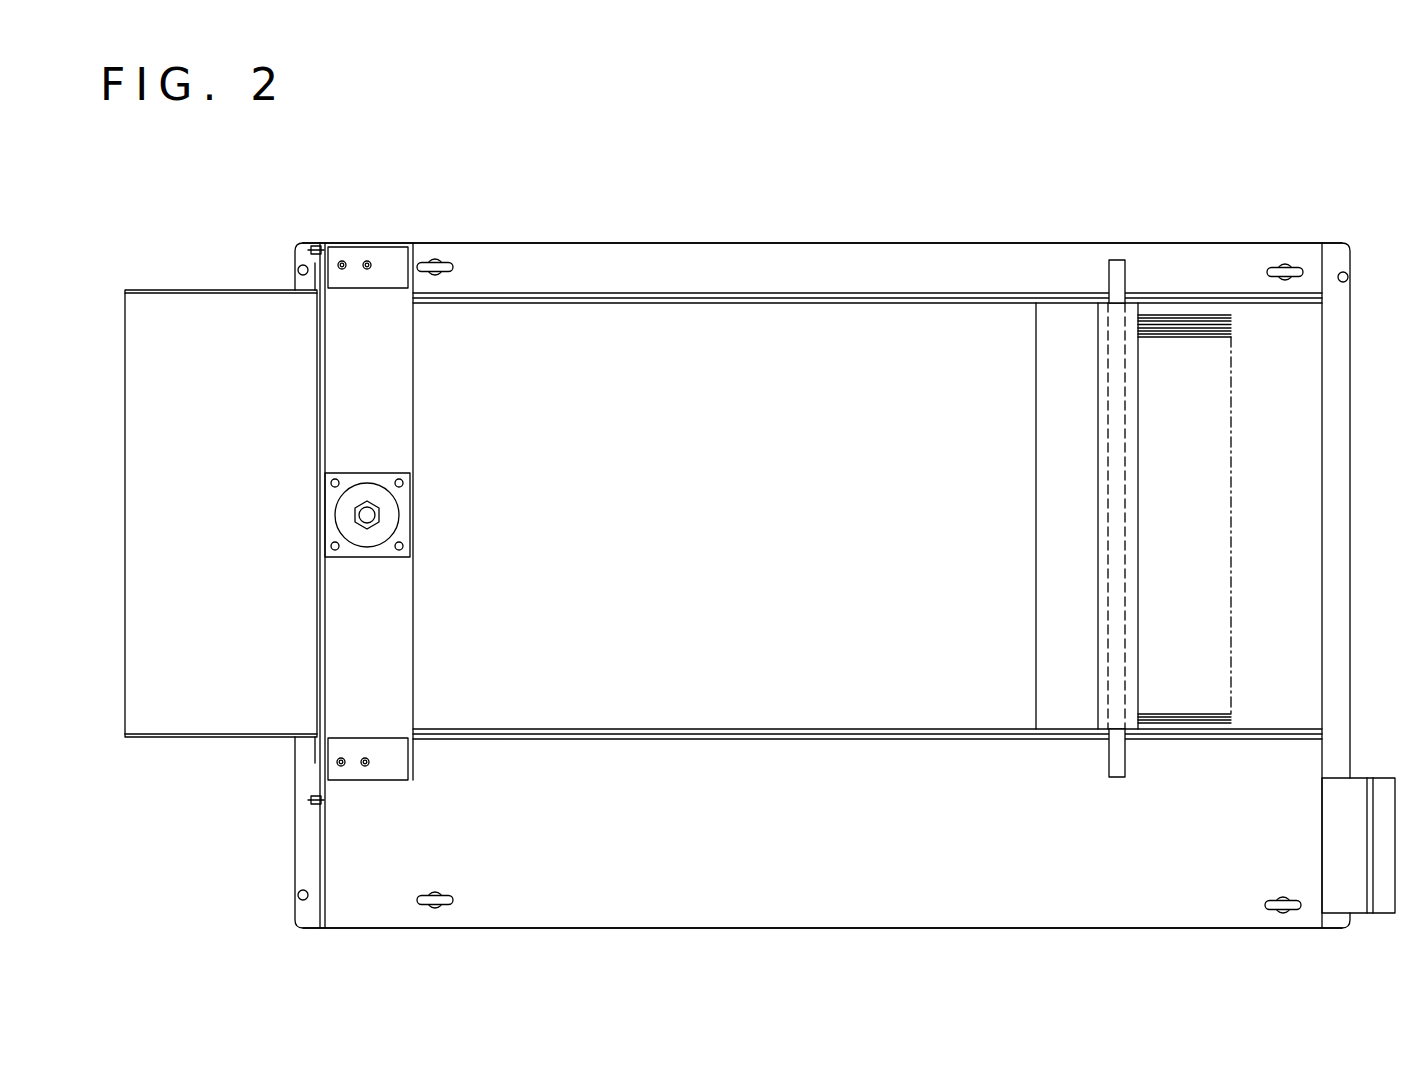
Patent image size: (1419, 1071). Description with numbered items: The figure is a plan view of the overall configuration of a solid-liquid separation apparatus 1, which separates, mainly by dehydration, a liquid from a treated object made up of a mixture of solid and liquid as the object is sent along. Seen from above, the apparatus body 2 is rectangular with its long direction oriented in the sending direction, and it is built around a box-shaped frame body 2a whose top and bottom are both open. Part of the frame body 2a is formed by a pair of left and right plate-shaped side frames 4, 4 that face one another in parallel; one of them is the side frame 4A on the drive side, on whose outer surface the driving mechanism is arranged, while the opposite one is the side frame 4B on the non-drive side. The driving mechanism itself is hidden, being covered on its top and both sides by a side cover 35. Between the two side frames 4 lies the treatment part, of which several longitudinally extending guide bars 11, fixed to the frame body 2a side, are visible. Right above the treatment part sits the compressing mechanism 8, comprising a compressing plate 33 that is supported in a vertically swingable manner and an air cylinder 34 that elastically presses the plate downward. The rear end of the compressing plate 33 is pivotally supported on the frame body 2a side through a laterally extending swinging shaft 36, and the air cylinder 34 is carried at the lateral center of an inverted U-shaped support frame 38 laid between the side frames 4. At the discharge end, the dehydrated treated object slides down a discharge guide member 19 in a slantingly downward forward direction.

The separation apparatus 1 is at (248, 251).
The apparatus body 2 is at (677, 236).
The frame body 2a is at (1078, 243).
The side frames 4 is at (867, 518).
The side frame on drive side 4A is at (722, 729).
The side frame on non-drive side 4B is at (657, 303).
The compressing mechanism 8 is at (552, 652).
The guide bars 11 is at (1232, 330).
The discharge guide member 19 is at (236, 745).
The compressing plate 33 is at (617, 686).
The air cylinder 34 is at (355, 484).
The side cover 35 is at (815, 860).
The swinging shaft 36 is at (1108, 752).
The support frame 38 is at (413, 428).